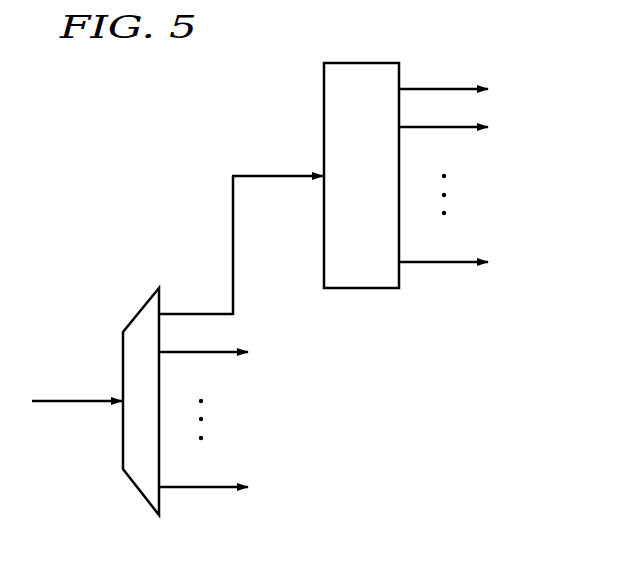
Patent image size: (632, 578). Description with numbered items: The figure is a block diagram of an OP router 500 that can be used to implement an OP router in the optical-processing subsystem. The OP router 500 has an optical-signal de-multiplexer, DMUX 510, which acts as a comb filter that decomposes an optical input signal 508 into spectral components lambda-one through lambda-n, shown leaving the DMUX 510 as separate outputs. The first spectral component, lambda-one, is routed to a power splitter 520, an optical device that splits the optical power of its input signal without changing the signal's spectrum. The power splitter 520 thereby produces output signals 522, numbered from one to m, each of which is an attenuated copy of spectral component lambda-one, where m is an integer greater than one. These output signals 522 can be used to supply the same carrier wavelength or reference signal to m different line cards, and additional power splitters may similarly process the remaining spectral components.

The OP router 500 is at (145, 91).
The optical input signal 508 is at (80, 399).
The optical-signal de-multiplexer (DMUX) 510 is at (121, 428).
The power splitter 520 is at (349, 63).
The output signals 522 is at (470, 87).